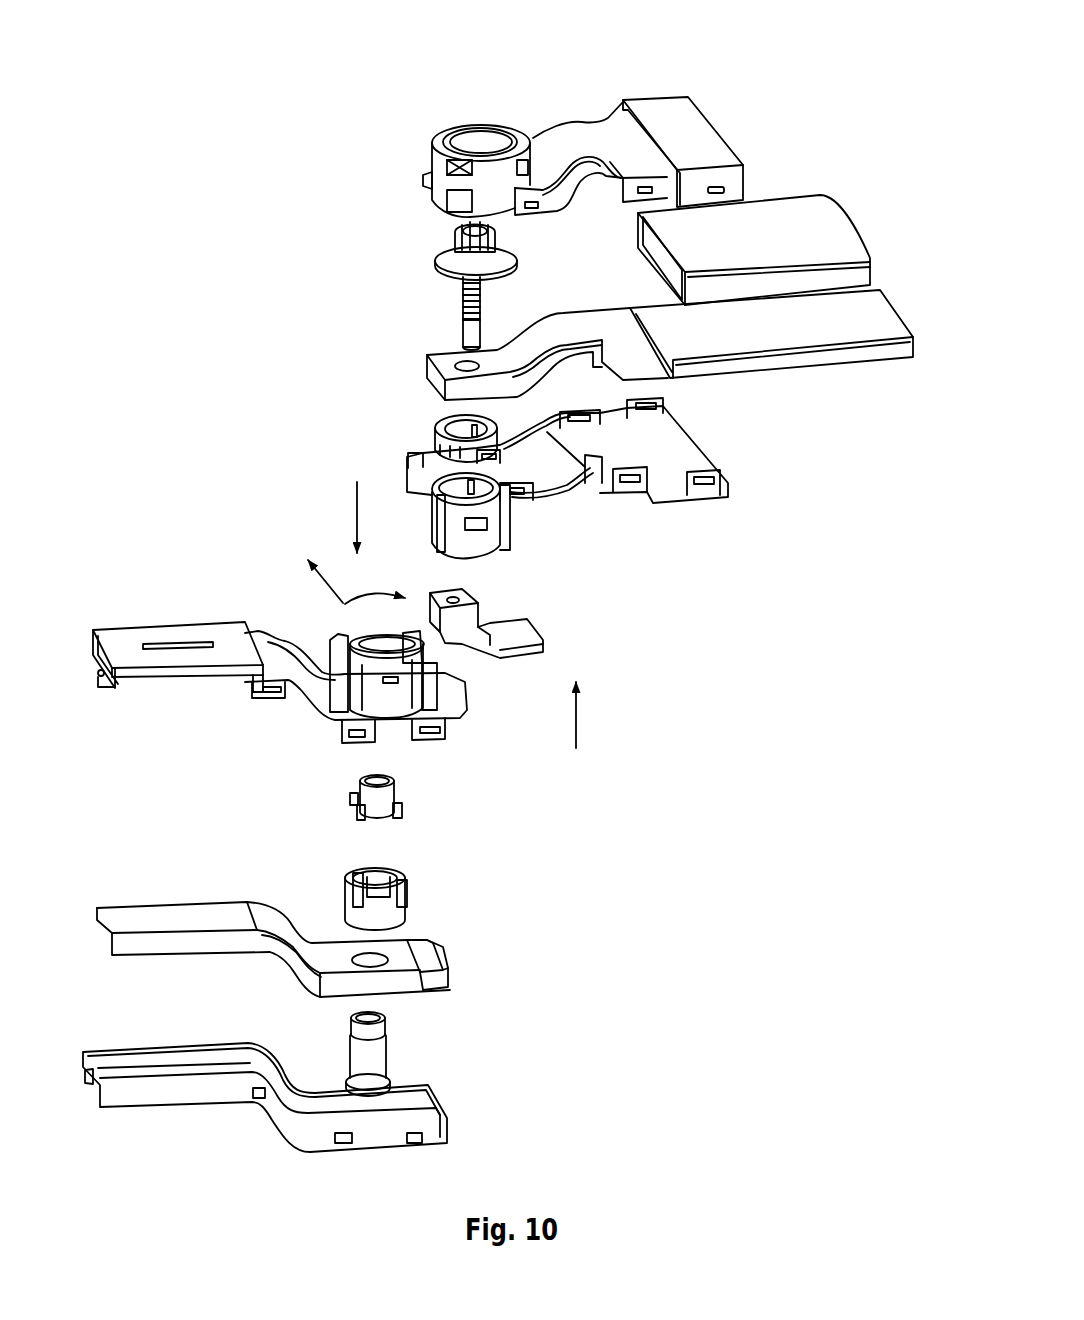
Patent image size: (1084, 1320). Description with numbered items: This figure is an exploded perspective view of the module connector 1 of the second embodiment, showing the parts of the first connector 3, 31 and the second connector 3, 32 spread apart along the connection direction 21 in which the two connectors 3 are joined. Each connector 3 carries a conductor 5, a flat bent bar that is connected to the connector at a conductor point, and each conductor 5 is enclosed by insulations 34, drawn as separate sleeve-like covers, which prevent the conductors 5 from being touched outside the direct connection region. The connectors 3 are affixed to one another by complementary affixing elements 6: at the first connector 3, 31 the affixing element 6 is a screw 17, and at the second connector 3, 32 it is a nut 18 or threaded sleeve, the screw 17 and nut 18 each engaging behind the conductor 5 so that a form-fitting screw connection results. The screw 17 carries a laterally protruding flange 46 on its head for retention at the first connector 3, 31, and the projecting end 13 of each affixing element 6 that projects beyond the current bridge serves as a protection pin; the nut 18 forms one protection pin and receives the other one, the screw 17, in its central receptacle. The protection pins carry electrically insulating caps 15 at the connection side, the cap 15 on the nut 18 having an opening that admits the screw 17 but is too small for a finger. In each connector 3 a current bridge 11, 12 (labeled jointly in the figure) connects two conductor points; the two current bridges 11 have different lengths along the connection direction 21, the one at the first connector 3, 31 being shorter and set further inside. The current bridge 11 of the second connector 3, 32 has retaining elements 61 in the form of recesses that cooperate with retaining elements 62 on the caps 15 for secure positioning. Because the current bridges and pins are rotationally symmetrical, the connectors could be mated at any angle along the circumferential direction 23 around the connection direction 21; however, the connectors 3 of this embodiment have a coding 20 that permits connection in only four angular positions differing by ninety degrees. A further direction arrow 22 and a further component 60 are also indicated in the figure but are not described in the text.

The module connector 1 is at (320, 40).
The connector 3 is at (513, 563).
The first connector 31 is at (408, 147).
The second connector 32 is at (590, 975).
The insulation 34 is at (567, 142).
The conductor 5 is at (590, 306).
The affixing element 6 is at (525, 268).
The flange 46 is at (428, 253).
The projecting end 13 is at (494, 310).
The screw 17 is at (452, 307).
The cap 15 is at (463, 342).
The bushing 12 is at (425, 430).
The current bridge 11 is at (435, 667).
The connection direction 21 is at (356, 520).
The removal direction 22 is at (318, 586).
The circumferential direction 23 is at (378, 596).
The coding 20 is at (334, 637).
The clip contact 60 is at (555, 643).
The retaining element 62 is at (350, 796).
The retaining element 61 is at (353, 873).
The nut 18 is at (407, 1058).